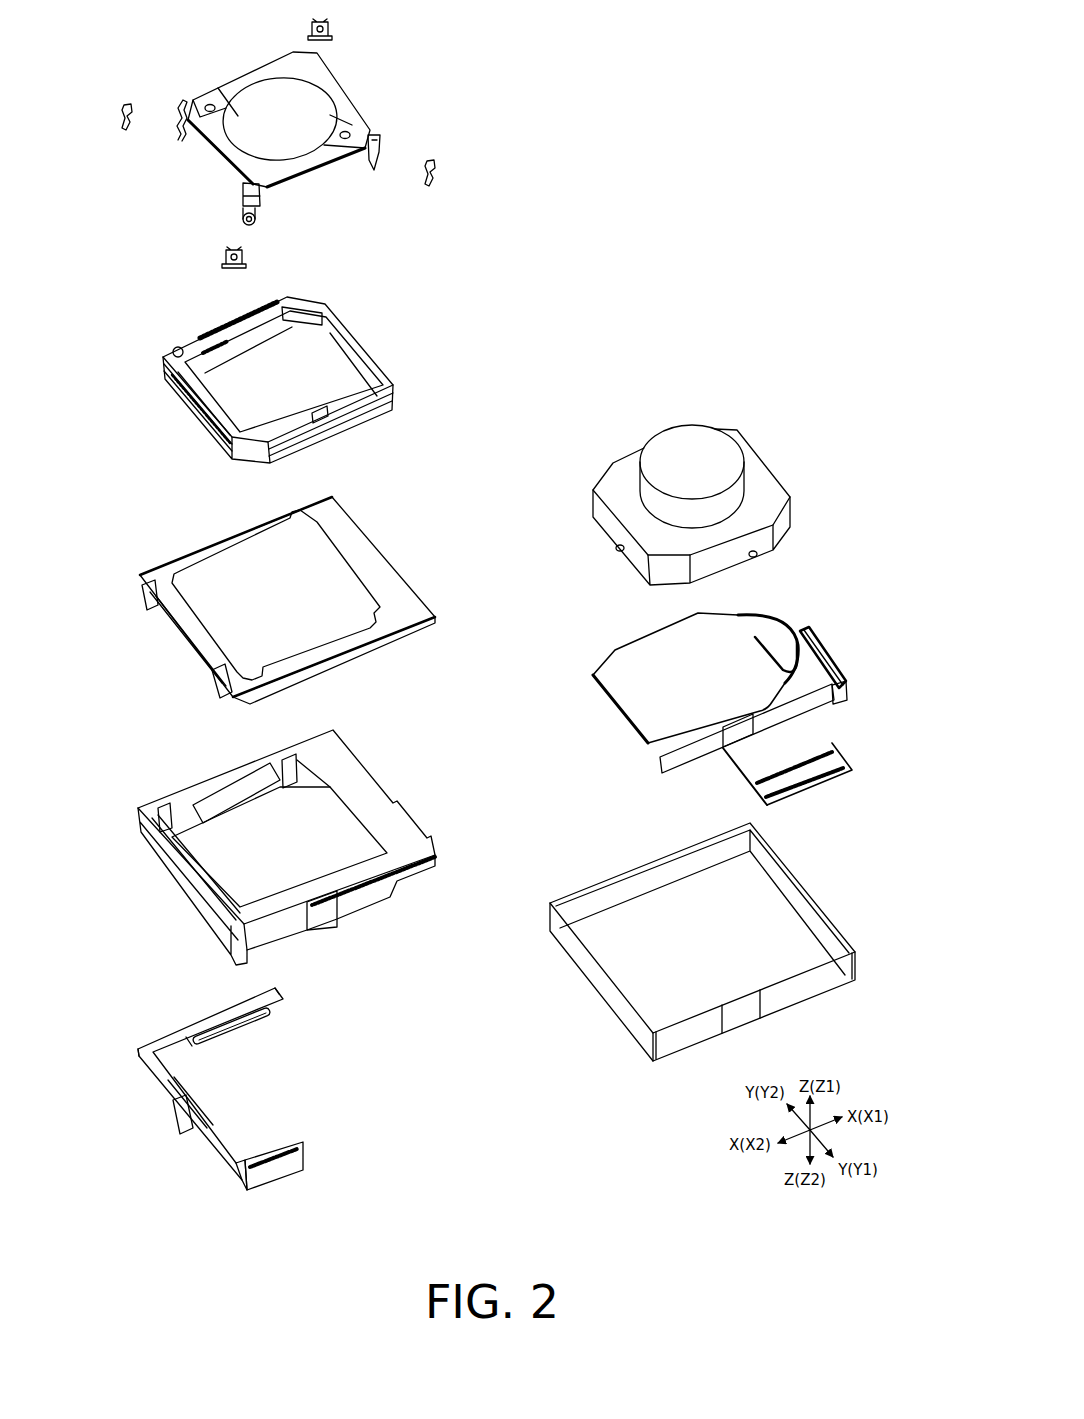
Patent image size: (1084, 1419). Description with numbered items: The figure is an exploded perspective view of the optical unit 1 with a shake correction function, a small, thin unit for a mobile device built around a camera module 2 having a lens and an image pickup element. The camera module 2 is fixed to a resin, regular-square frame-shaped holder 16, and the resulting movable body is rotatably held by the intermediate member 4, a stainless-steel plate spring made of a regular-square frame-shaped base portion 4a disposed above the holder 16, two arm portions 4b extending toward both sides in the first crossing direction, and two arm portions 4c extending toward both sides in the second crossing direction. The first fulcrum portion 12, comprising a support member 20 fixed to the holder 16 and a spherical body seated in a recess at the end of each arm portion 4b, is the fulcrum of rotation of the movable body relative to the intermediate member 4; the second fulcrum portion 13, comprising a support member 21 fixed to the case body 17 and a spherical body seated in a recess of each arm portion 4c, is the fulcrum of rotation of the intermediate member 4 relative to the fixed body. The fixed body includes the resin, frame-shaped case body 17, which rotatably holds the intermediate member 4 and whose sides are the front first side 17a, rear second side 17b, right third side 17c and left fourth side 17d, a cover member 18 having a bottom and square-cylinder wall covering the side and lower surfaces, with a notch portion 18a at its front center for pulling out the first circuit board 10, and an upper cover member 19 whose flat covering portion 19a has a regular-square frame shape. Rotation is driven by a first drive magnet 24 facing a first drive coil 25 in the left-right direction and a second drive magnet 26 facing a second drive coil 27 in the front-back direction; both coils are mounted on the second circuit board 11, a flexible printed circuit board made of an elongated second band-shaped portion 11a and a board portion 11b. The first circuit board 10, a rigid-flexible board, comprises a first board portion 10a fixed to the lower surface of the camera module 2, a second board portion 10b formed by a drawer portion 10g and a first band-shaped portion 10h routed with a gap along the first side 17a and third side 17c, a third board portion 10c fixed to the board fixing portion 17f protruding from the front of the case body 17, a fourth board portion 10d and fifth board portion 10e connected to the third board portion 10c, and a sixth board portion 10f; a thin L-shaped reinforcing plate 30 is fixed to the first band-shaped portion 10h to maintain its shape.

The optical unit 1 is at (736, 105).
The camera module 2 is at (677, 424).
The intermediate member 4 is at (298, 126).
The base portion 4a is at (244, 75).
The arm portion 4b is at (181, 141).
The arm portion 4c is at (262, 196).
The first circuit board 10 is at (737, 706).
The first board portion 10a is at (637, 638).
The second board portion 10b is at (841, 640).
The third board portion 10c is at (735, 725).
The fourth board portion 10d is at (691, 768).
The fifth board portion 10e is at (735, 790).
The sixth board portion 10f is at (813, 795).
The drawer portion 10g is at (781, 612).
The first band-shaped portion 10h is at (825, 633).
The second circuit board 11 is at (212, 1089).
The second band-shaped portion 11a is at (212, 1089).
The board portion 11b is at (288, 1147).
The first fulcrum portion 12 is at (123, 152).
The second fulcrum portion 13 is at (363, 46).
The holder 16 is at (279, 370).
The case body 17 is at (296, 841).
The first side 17a is at (373, 930).
The second side 17b is at (200, 756).
The third side 17c is at (422, 775).
The fourth side 17d is at (170, 905).
The board fixing portion 17f is at (322, 930).
The cover member 18 is at (700, 942).
The notch portion 18a is at (748, 1032).
The cover member 19 is at (307, 600).
The covering portion 19a is at (388, 557).
The support member 20 is at (126, 103).
The support member 21 is at (333, 31).
The first drive magnet 24 is at (190, 418).
The first drive coil 25 is at (203, 1112).
The second drive magnet 26 is at (216, 325).
The second drive coil 27 is at (257, 1032).
The reinforcing plate 30 is at (838, 708).